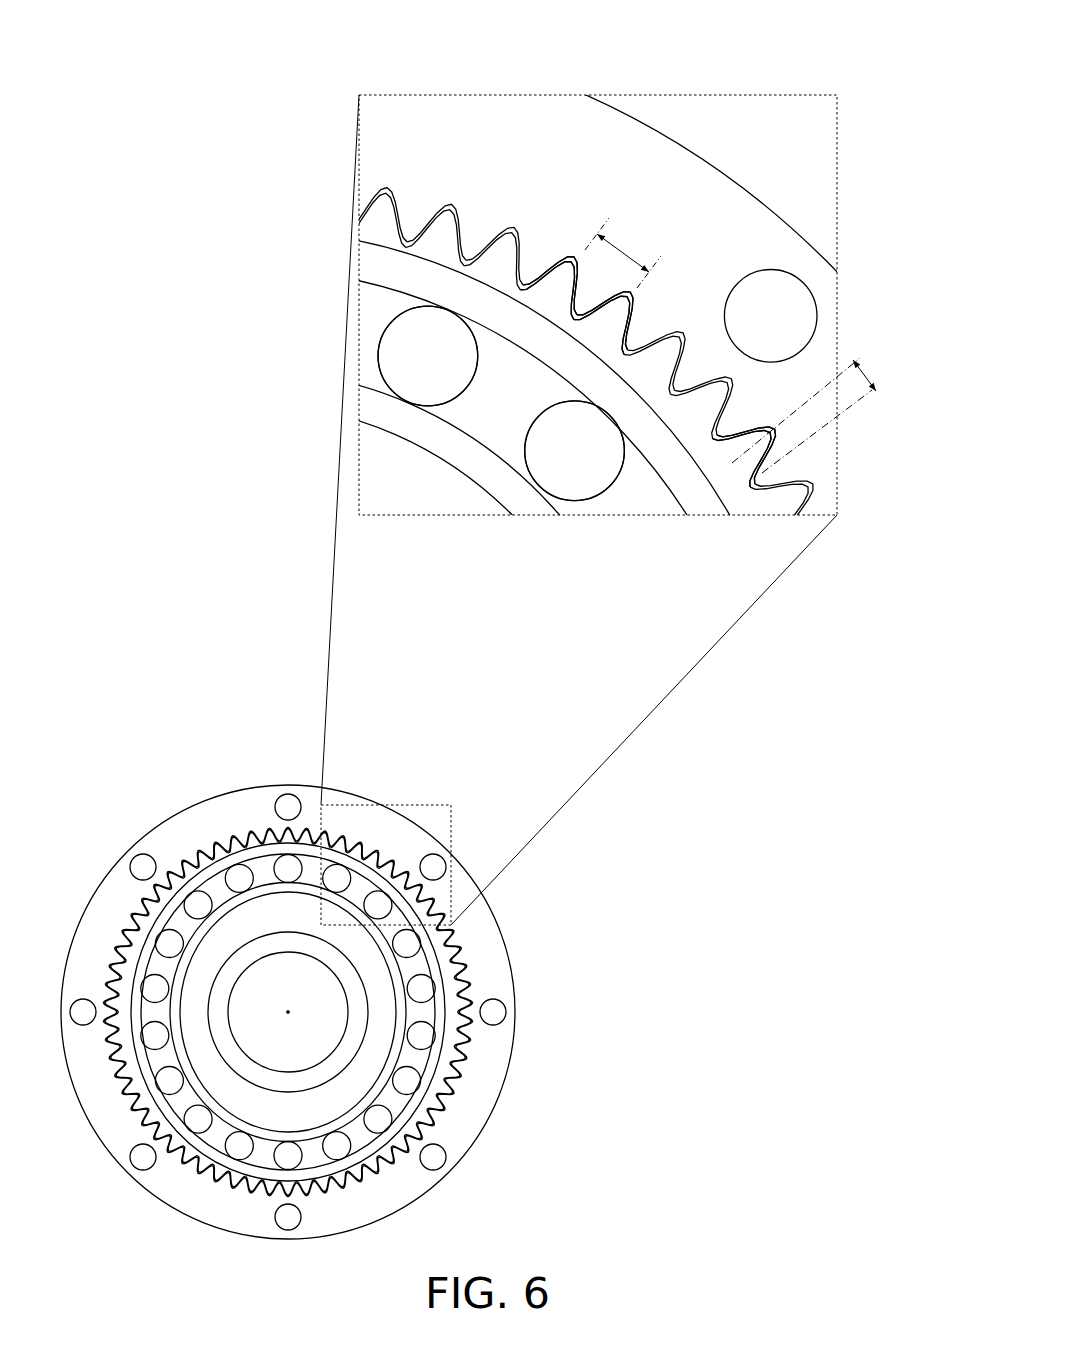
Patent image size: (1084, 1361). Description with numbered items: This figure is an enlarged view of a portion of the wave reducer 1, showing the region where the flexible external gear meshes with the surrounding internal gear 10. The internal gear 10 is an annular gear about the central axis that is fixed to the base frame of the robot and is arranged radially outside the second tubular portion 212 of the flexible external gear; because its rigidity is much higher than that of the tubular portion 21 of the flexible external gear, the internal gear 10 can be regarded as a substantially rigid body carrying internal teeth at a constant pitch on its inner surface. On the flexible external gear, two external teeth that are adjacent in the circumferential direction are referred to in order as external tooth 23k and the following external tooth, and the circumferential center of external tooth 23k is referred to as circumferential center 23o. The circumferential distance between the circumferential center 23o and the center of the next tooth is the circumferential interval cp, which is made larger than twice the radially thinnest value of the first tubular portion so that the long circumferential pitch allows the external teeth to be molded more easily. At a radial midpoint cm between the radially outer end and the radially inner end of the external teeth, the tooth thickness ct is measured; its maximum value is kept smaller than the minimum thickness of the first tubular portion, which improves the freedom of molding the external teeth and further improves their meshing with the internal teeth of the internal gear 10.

The wave reducer 1 is at (180, 799).
The internal gear 10 is at (640, 143).
The tubular portion 21 is at (557, 316).
The second tubular portion 212 is at (430, 248).
The external tooth 23k is at (547, 296).
The circumferential center 23o is at (485, 300).
The circumferential interval cp is at (622, 250).
The tooth thickness ct is at (819, 415).
The radial midpoint cm is at (744, 470).